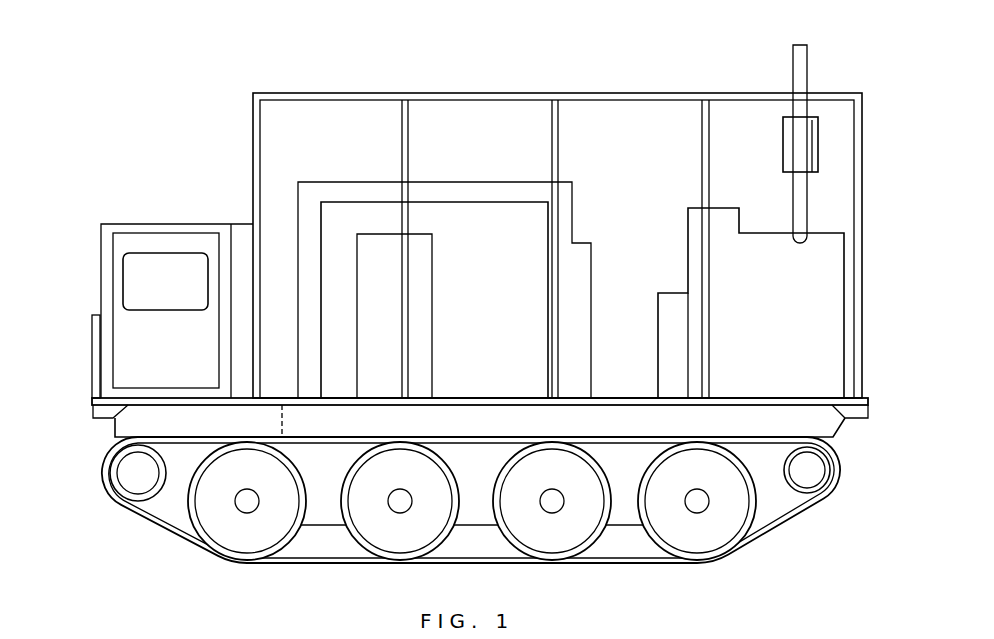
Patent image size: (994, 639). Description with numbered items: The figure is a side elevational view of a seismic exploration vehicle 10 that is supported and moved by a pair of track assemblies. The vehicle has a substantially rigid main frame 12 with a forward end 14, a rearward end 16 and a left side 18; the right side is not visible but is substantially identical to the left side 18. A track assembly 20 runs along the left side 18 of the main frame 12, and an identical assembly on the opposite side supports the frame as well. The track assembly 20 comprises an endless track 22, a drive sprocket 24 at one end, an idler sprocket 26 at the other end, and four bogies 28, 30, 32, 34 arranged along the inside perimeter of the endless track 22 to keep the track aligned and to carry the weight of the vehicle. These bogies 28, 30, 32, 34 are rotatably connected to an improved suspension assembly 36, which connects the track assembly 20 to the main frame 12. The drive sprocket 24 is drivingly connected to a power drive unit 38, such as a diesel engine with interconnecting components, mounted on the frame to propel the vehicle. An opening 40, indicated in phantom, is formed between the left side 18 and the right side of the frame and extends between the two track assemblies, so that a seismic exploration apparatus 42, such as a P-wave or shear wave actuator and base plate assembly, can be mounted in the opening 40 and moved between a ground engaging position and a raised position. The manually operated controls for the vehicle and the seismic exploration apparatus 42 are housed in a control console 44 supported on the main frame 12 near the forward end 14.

The seismic exploration vehicle 10 is at (516, 82).
The main frame 12 is at (110, 442).
The forward end 14 is at (112, 427).
The rearward end 16 is at (842, 424).
The left side 18 is at (481, 427).
The track assembly 20 is at (462, 519).
The endless track 22 is at (190, 548).
The drive sprocket 24 is at (118, 486).
The idler sprocket 26 is at (798, 490).
The bogie 28 is at (270, 553).
The bogie 30 is at (438, 540).
The bogie 32 is at (578, 540).
The bogie 34 is at (705, 553).
The suspension assembly 36 is at (332, 504).
The power drive unit 38 is at (792, 340).
The opening 40 is at (590, 420).
The seismic exploration apparatus 42 is at (577, 210).
The control console 44 is at (180, 368).